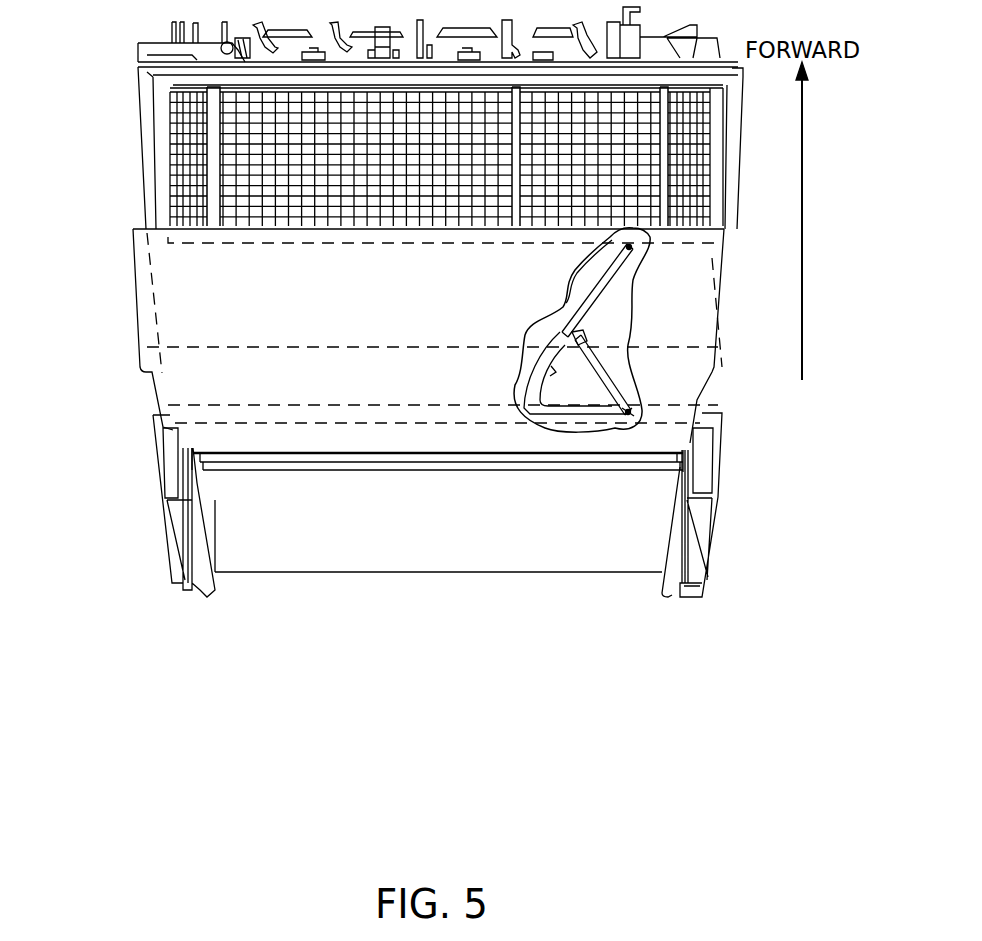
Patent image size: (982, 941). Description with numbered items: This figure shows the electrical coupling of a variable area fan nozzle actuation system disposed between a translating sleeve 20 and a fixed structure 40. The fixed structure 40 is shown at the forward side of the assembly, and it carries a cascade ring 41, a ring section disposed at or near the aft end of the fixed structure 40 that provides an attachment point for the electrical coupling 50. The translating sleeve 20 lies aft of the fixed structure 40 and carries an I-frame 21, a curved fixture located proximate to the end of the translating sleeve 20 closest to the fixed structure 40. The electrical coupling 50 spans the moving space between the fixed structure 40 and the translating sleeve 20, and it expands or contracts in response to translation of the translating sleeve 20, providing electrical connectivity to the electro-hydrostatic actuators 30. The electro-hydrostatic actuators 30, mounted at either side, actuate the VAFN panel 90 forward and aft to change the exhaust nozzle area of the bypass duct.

The translating sleeve 20 is at (152, 283).
The I-frame 21 is at (630, 411).
The electro-hydrostatic actuator 30 is at (165, 462).
The fixed structure 40 is at (175, 213).
The cascade ring 41 is at (628, 245).
The electrical coupling 50 is at (580, 337).
The VAFN panel 90 is at (227, 543).